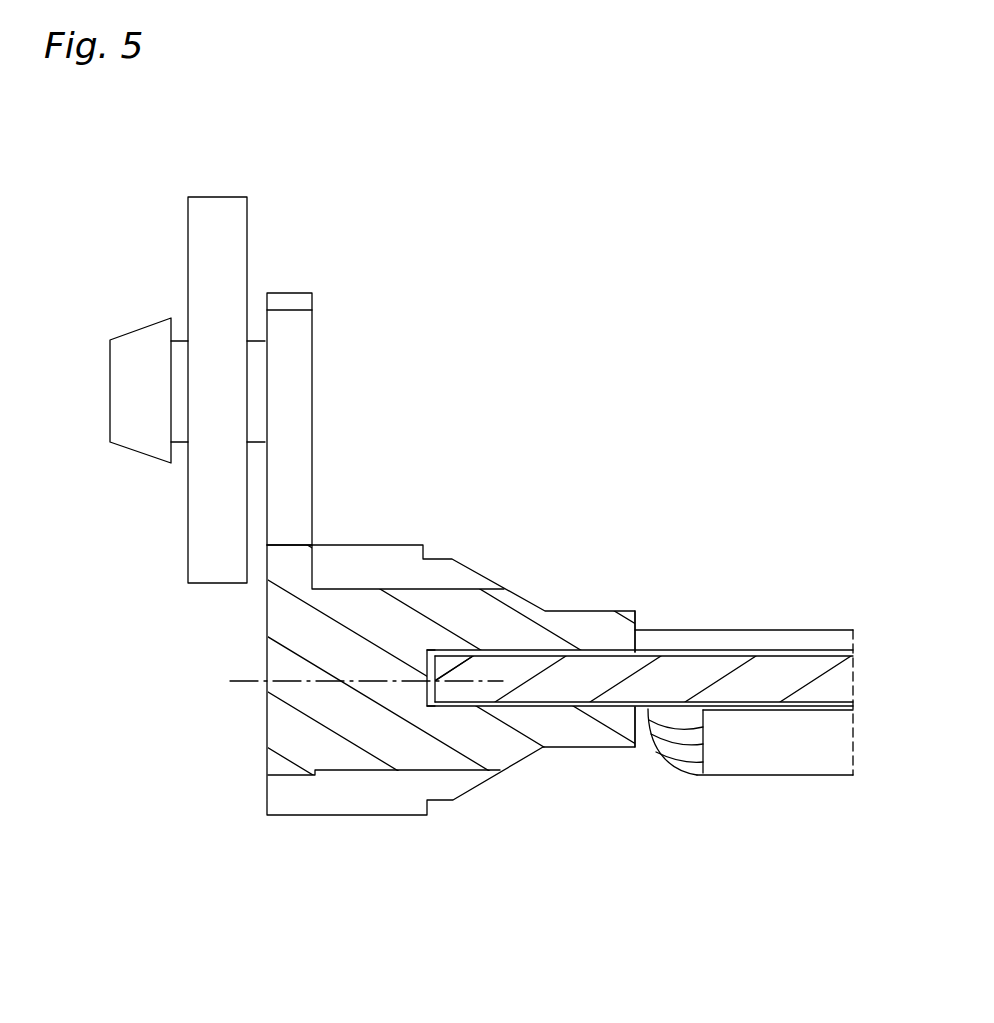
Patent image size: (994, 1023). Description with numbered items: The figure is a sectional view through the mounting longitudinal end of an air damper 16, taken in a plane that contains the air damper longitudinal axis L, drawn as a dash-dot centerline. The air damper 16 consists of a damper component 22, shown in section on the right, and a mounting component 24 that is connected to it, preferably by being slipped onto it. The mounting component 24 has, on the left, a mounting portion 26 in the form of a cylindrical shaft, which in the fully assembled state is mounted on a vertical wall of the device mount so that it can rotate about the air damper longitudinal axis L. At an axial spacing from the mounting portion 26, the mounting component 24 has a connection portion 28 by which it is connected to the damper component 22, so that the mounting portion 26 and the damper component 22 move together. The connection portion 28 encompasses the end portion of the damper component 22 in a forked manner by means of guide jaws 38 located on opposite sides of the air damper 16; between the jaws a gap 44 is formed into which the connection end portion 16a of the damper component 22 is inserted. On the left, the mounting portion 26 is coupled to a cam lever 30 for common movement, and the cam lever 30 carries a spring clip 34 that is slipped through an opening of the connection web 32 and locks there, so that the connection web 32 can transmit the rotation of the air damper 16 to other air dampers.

The air damper 16 is at (830, 681).
The pipe end section 16a is at (523, 672).
The damper component 22 is at (686, 668).
The mounting component 24 is at (489, 612).
The mounting portion 26 is at (362, 816).
The connection portion 28 is at (535, 812).
The cam lever 30 is at (304, 506).
The connection web 32 is at (234, 231).
The spring clip 34 is at (138, 322).
The guide jaw 38 is at (600, 626).
The gap 44 is at (426, 675).
The air damper longitudinal axis L is at (243, 683).